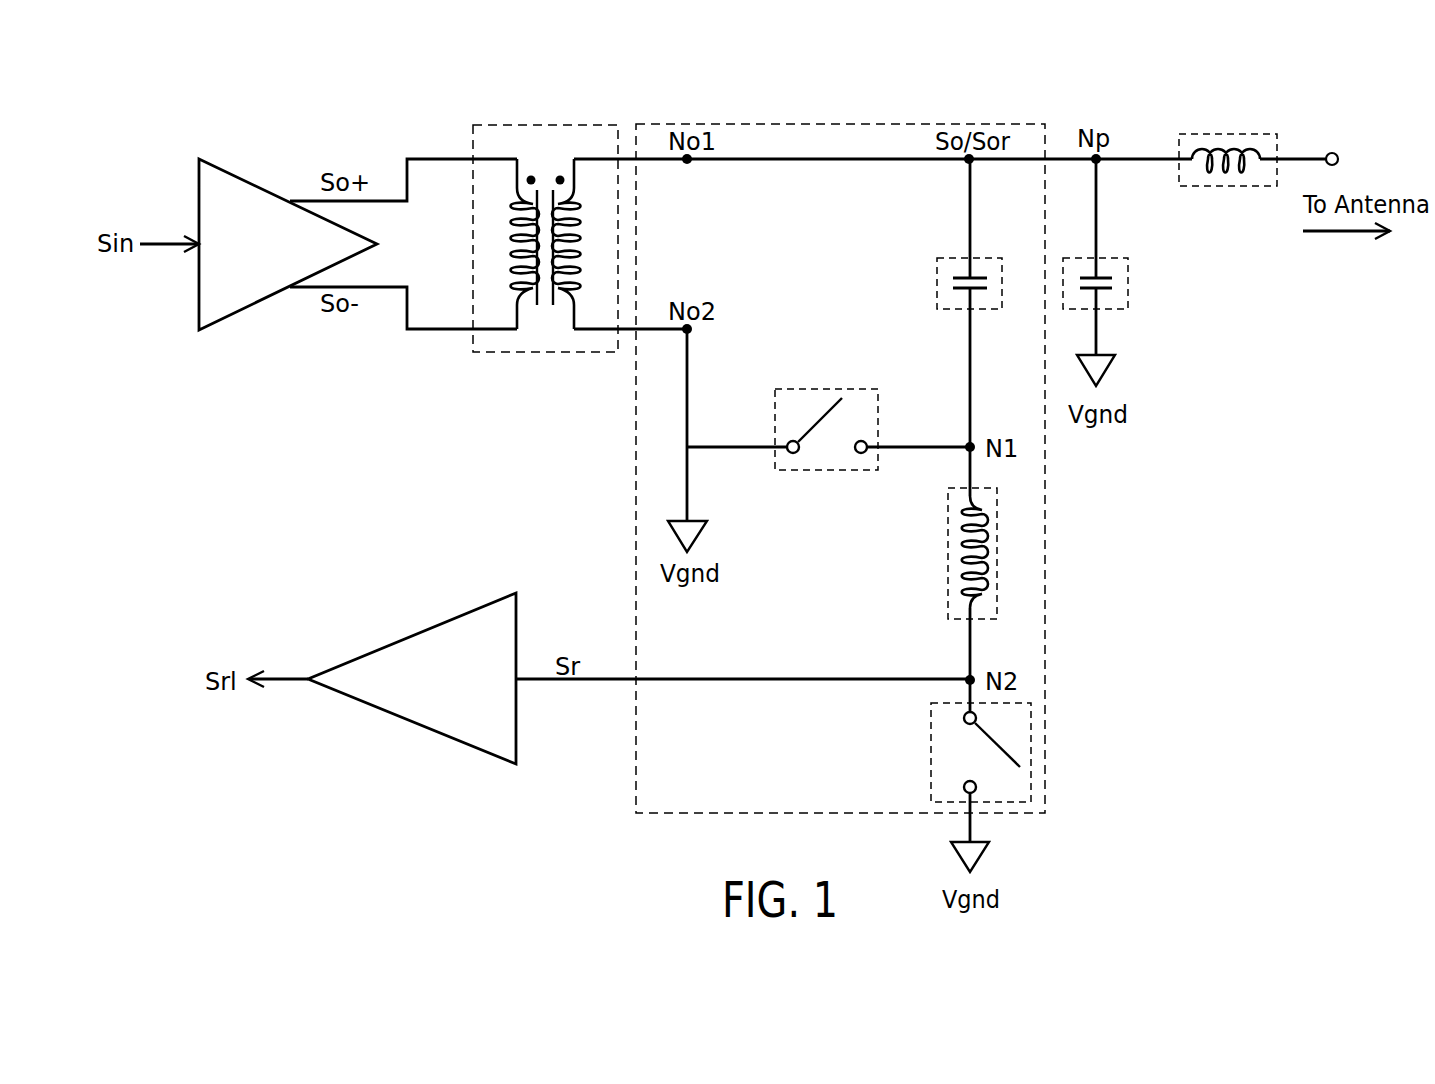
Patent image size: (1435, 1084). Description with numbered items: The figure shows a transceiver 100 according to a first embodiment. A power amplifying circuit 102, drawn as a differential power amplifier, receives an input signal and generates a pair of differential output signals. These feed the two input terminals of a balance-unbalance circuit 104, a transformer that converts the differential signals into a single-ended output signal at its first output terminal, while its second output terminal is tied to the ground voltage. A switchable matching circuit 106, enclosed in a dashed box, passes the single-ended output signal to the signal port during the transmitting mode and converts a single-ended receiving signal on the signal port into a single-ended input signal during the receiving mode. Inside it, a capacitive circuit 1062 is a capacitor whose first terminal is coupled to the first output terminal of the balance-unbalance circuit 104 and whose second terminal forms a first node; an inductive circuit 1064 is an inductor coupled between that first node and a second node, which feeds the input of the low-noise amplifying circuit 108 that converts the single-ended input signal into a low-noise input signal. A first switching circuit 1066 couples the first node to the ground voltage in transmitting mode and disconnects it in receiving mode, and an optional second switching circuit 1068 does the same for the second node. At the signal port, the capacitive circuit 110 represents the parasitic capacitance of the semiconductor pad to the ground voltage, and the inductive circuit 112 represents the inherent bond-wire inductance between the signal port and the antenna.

The transceiver 100 is at (1183, 478).
The power amplifying circuit 102 is at (241, 180).
The balance-unbalance circuit (Balun) 104 is at (593, 124).
The switchable matching circuit 106 is at (1010, 123).
The low-noise amplifying circuit 108 is at (517, 615).
The capacitive circuit 110 is at (1118, 258).
The inductive circuit 112 is at (1253, 133).
The capacitive circuit 1062 is at (960, 258).
The inductive circuit 1064 is at (998, 520).
The first switching circuit 1066 is at (793, 389).
The second switching circuit 1068 is at (1032, 758).